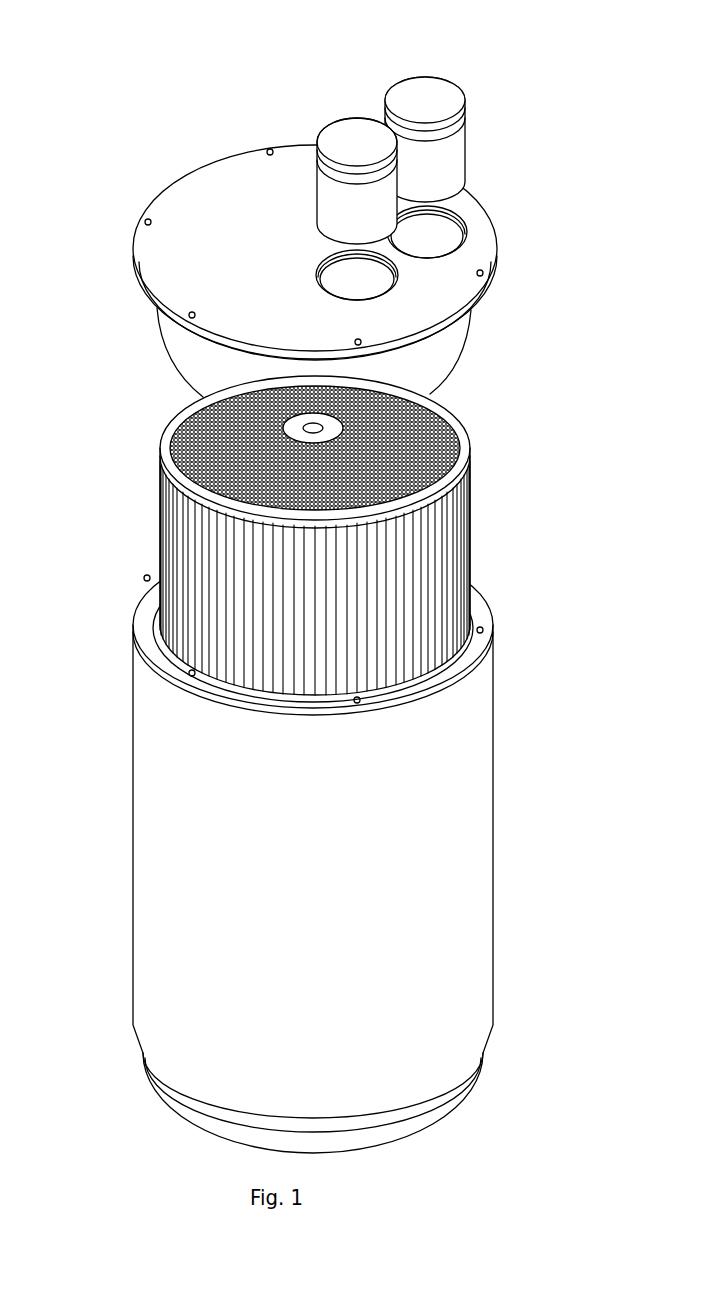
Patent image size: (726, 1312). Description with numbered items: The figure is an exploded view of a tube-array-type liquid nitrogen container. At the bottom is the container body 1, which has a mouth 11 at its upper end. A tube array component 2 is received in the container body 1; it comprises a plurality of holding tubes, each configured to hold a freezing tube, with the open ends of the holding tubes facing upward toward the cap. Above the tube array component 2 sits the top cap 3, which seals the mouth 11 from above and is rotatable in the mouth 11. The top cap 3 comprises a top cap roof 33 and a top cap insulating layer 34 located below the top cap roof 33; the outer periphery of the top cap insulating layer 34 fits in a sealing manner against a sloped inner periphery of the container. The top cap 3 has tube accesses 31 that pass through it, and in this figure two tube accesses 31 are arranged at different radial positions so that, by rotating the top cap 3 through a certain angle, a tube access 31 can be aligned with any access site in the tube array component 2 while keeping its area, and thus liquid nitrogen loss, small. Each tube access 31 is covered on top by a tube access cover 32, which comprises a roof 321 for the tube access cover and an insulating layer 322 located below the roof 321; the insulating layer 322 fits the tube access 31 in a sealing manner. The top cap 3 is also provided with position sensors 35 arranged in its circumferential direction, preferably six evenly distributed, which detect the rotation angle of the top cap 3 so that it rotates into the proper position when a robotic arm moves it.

The container body 1 is at (468, 870).
The mouth 11 is at (465, 610).
The tube array component 2 is at (445, 522).
The top cap 3 is at (270, 222).
The tube access 31 is at (440, 237).
The tube access cover 32 is at (432, 126).
The roof for the tube access cover 321 is at (450, 103).
The insulating layer for the tube access cover 322 is at (453, 165).
The top cap roof 33 is at (190, 207).
The top cap insulating layer 34 is at (177, 347).
The position sensor 35 is at (143, 220).